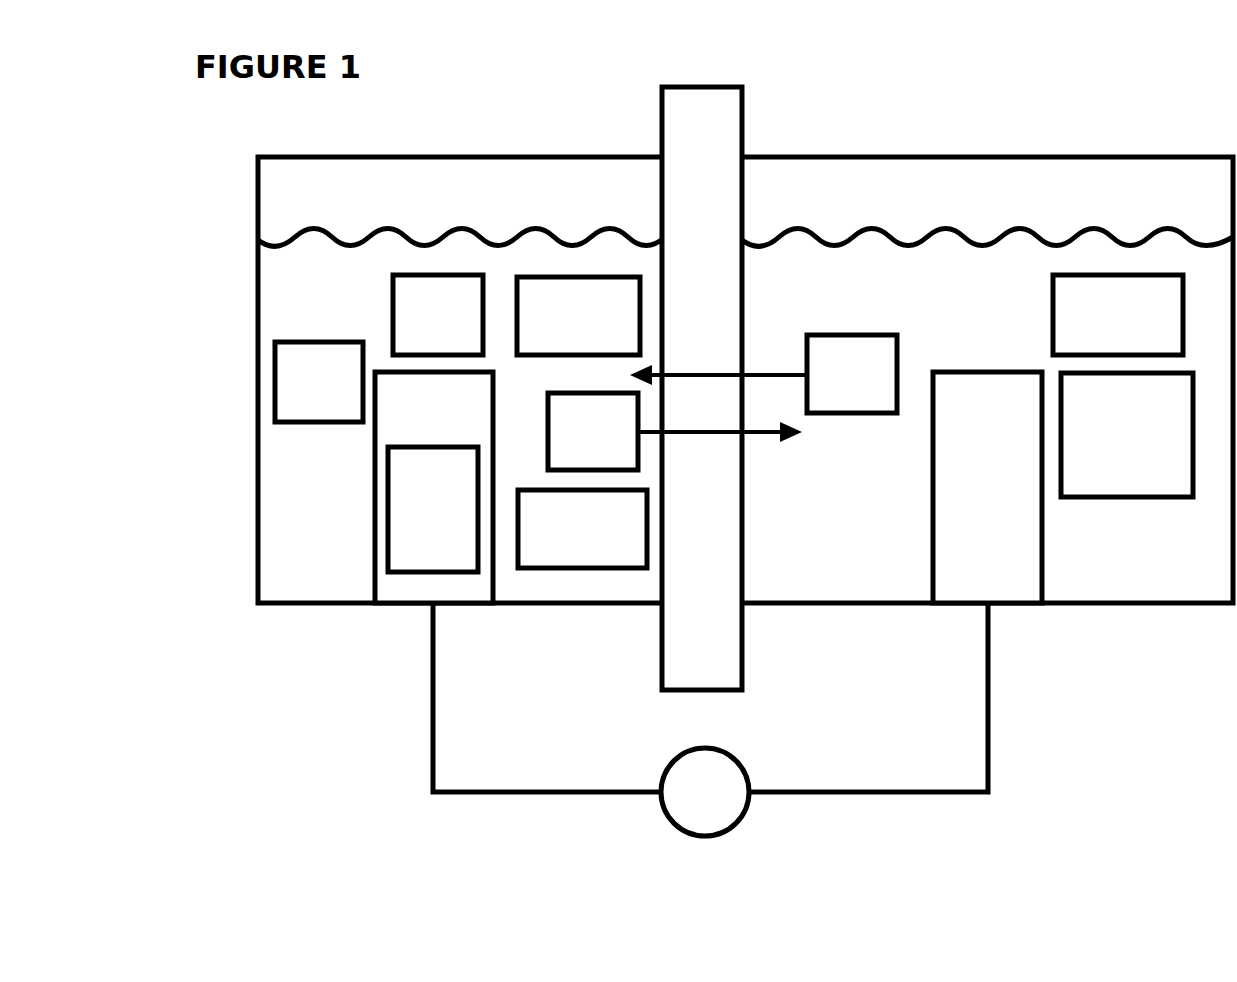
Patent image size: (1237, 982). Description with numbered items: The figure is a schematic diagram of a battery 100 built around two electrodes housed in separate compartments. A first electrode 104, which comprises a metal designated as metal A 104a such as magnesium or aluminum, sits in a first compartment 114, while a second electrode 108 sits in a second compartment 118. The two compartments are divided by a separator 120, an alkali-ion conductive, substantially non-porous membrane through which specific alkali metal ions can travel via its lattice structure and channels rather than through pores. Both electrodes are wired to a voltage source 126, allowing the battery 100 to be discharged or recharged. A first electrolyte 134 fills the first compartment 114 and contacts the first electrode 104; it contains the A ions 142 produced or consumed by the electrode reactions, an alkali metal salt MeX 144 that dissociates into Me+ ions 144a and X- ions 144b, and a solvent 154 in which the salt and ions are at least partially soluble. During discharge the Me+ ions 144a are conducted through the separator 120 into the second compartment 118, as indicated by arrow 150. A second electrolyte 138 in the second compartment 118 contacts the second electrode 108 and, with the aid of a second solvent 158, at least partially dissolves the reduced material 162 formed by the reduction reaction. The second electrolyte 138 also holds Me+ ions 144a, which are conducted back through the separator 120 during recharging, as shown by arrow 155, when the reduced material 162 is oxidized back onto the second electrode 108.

The battery 100 is at (705, 480).
The first electrode 104 is at (412, 428).
The metal A 104a is at (404, 548).
The second electrode 108 is at (966, 494).
The first compartment 114 is at (258, 296).
The second compartment 118 is at (1096, 605).
The separator 120 is at (743, 128).
The voltage source 126 is at (740, 820).
The first electrolyte 134 is at (486, 231).
The second electrolyte 138 is at (948, 232).
The A ions 142 is at (556, 342).
The alkali metal salt MeX 144 is at (416, 341).
The Me+ ions 144a is at (564, 459).
The X- ions 144b is at (289, 408).
The arrow 150 is at (768, 435).
The solvent 154 is at (560, 557).
The arrow 155 is at (780, 375).
The second solvent 158 is at (1096, 342).
The reduced material 162 is at (1105, 477).